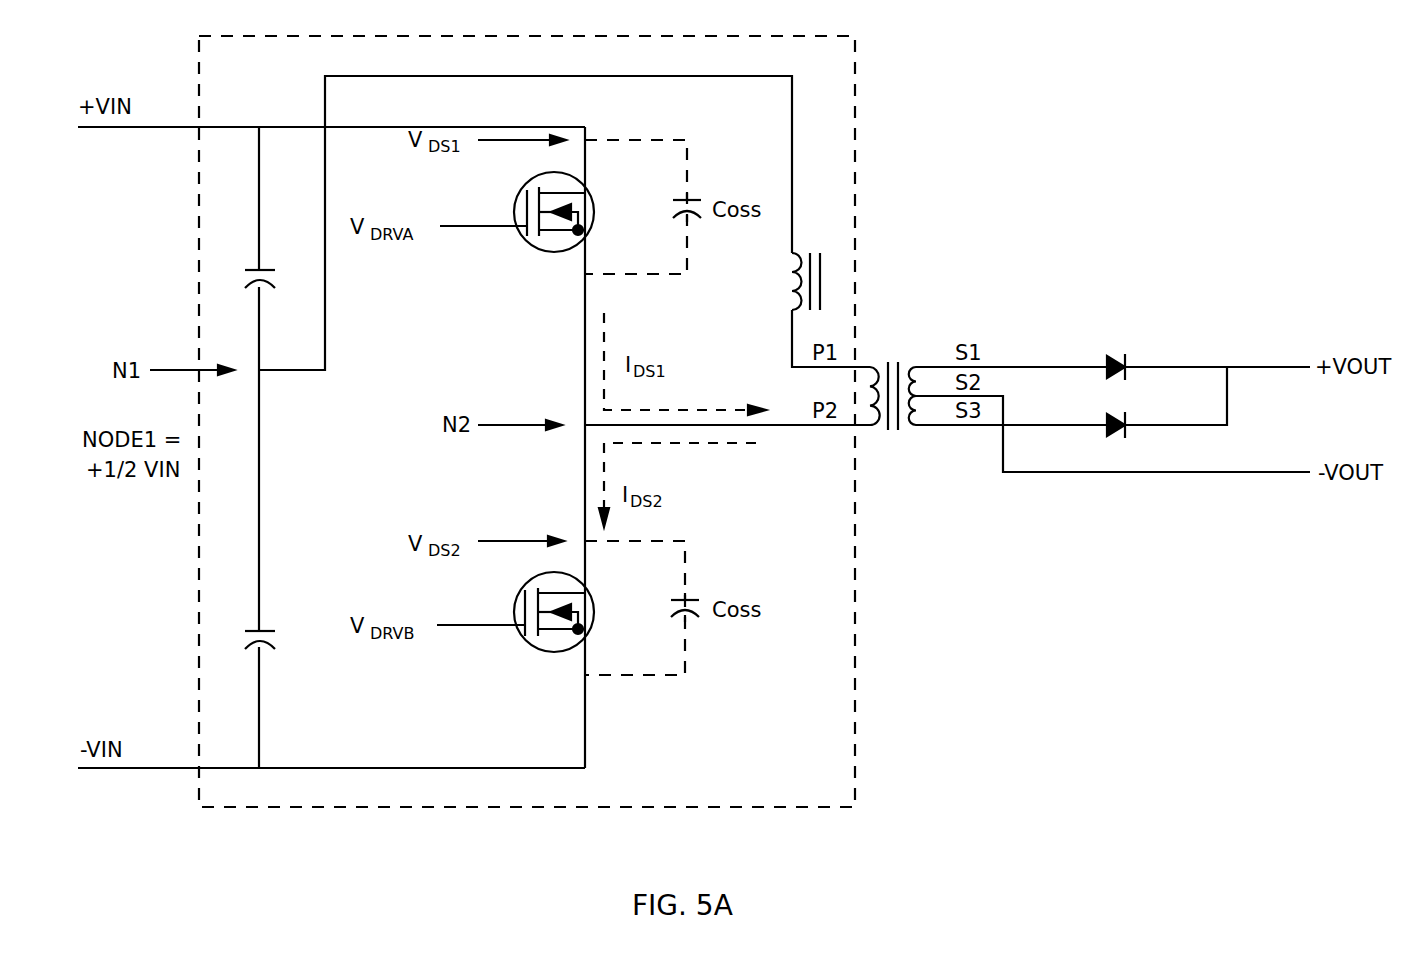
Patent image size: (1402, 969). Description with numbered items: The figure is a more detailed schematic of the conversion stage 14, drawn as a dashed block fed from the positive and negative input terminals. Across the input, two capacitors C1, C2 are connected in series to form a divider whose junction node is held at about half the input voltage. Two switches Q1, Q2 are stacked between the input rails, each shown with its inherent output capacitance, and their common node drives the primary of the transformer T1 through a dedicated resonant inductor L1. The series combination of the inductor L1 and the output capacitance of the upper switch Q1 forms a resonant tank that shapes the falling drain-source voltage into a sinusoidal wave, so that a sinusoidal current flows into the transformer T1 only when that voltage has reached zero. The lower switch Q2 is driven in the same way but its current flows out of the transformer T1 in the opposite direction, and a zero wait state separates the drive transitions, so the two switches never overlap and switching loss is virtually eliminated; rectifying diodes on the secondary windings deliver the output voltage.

The conversion stage 14 is at (855, 116).
The switch Q1 is at (517, 205).
The switch Q2 is at (515, 606).
The input divider capacitor C1 is at (277, 248).
The input divider capacitor C2 is at (277, 569).
The dedicated resonant inductor L1 is at (831, 310).
The transformer T1 is at (893, 384).